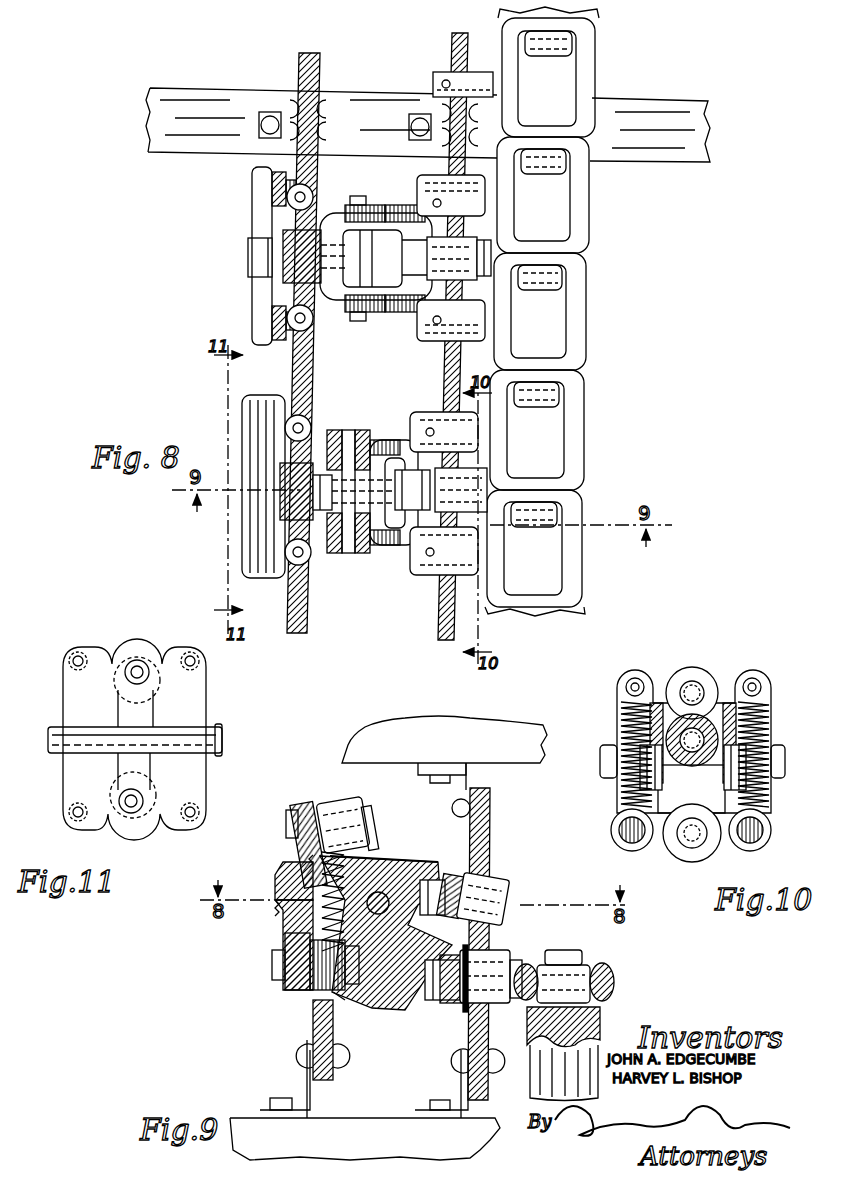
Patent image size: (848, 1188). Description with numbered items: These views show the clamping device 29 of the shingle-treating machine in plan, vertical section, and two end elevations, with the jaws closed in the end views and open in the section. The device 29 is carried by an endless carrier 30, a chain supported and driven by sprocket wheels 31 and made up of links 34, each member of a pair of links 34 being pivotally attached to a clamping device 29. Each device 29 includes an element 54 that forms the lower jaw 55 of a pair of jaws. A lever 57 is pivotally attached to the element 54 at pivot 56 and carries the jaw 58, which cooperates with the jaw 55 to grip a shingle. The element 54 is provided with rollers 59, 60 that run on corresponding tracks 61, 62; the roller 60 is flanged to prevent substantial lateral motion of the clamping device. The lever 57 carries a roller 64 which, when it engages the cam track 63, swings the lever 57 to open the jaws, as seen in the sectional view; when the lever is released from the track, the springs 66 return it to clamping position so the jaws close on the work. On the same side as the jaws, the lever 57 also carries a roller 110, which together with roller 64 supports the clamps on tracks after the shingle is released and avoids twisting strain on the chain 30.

In FIG. 9, the clamping device 29 is at (404, 857).
In FIG. 8, the endless carrier 30 is at (593, 311).
In FIG. 9, the endless carrier 30 is at (616, 969).
In FIG. 9, the sprocket wheel 31 is at (600, 1015).
In FIG. 8, the link 34 is at (582, 303).
In FIG. 8, the element 54 is at (387, 213).
In FIG. 9, the element 54 is at (408, 1000).
In FIG. 8, the jaw 55 is at (262, 548).
In FIG. 11, the jaw 55 is at (72, 755).
In FIG. 9, the jaw 55 is at (280, 905).
In FIG. 8, the pivot 56 is at (352, 316).
In FIG. 9, the pivot 56 is at (380, 915).
In FIG. 8, the lever 57 is at (392, 300).
In FIG. 9, the lever 57 is at (380, 860).
In FIG. 8, the jaw 58 is at (262, 197).
In FIG. 11, the jaw 58 is at (195, 727).
In FIG. 9, the jaw 58 is at (284, 882).
In FIG. 8, the roller 59 is at (280, 500).
In FIG. 11, the roller 59 is at (130, 830).
In FIG. 9, the roller 59 is at (313, 1005).
In FIG. 8, the roller 60 is at (480, 237).
In FIG. 10, the roller 60 is at (690, 864).
In FIG. 9, the roller 60 is at (468, 1020).
In FIG. 8, the track 61 is at (306, 619).
In FIG. 9, the track 61 is at (331, 1075).
In FIG. 8, the track 62 is at (449, 643).
In FIG. 9, the track 62 is at (472, 1081).
In FIG. 9, the cam track 63 is at (491, 838).
In FIG. 8, the roller 64 is at (478, 283).
In FIG. 10, the roller 64 is at (716, 717).
In FIG. 9, the roller 64 is at (490, 884).
In FIG. 8, the spring 66 is at (312, 198).
In FIG. 10, the spring 66 is at (762, 702).
In FIG. 9, the spring 66 is at (325, 870).
In FIG. 8, the roller 110 is at (290, 268).
In FIG. 11, the roller 110 is at (137, 658).
In FIG. 10, the roller 110 is at (695, 668).
In FIG. 9, the roller 110 is at (346, 808).